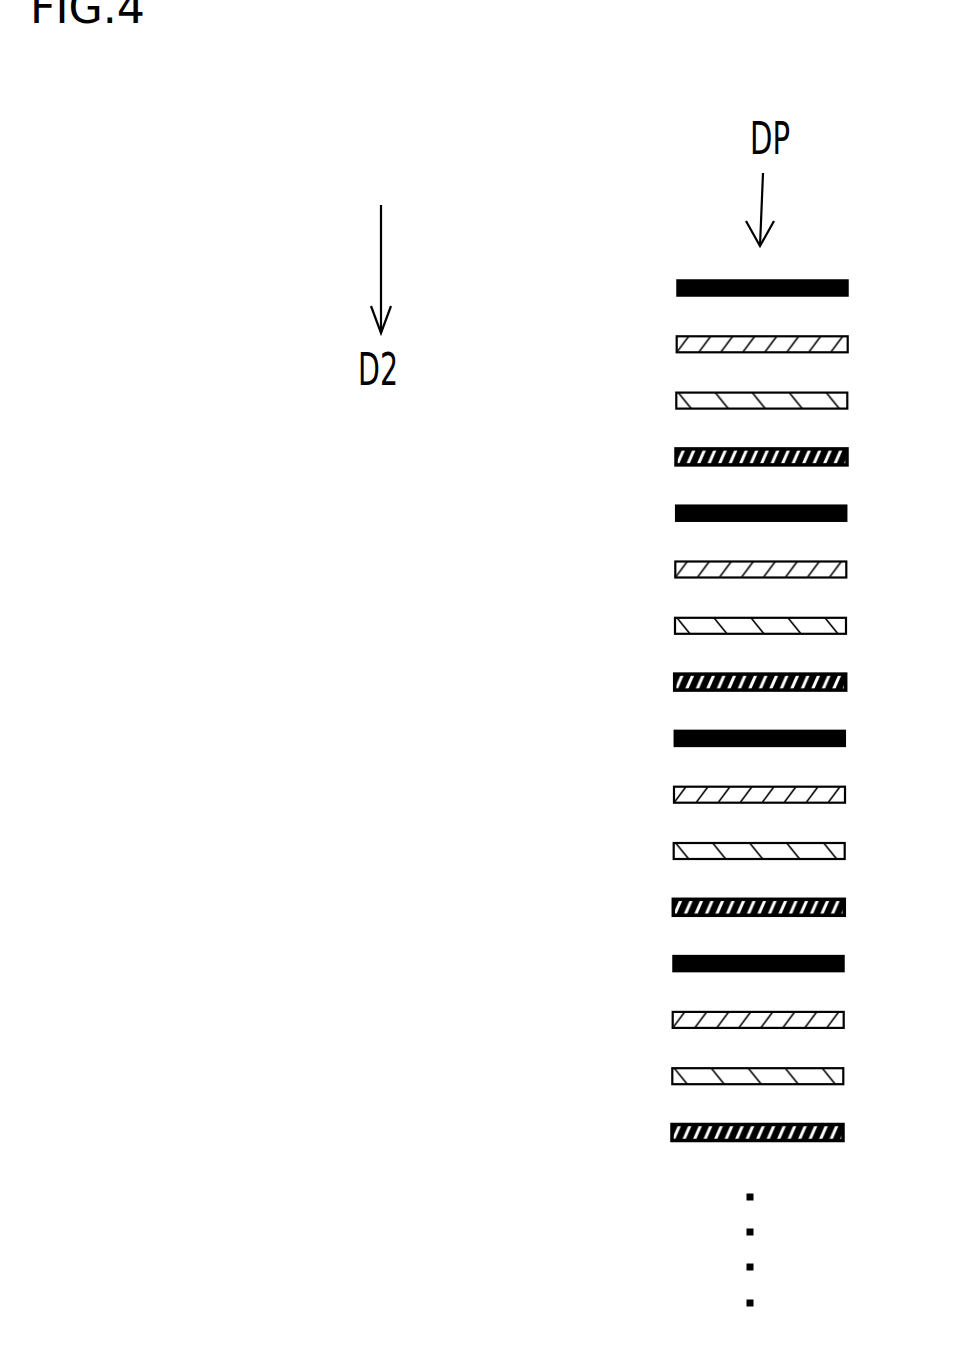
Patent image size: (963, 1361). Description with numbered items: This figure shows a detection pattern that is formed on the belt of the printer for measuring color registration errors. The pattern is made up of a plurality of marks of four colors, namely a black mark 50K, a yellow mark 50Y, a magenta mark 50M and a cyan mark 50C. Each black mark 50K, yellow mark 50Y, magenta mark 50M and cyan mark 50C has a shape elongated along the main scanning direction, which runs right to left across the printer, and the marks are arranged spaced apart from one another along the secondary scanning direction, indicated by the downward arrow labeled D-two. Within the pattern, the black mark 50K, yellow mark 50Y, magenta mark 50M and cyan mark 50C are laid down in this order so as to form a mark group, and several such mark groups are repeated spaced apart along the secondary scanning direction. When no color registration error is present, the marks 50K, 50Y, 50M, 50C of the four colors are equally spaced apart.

The black mark 50K is at (677, 288).
The yellow mark 50Y is at (677, 345).
The magenta mark 50M is at (677, 402).
The cyan mark 50C is at (677, 459).